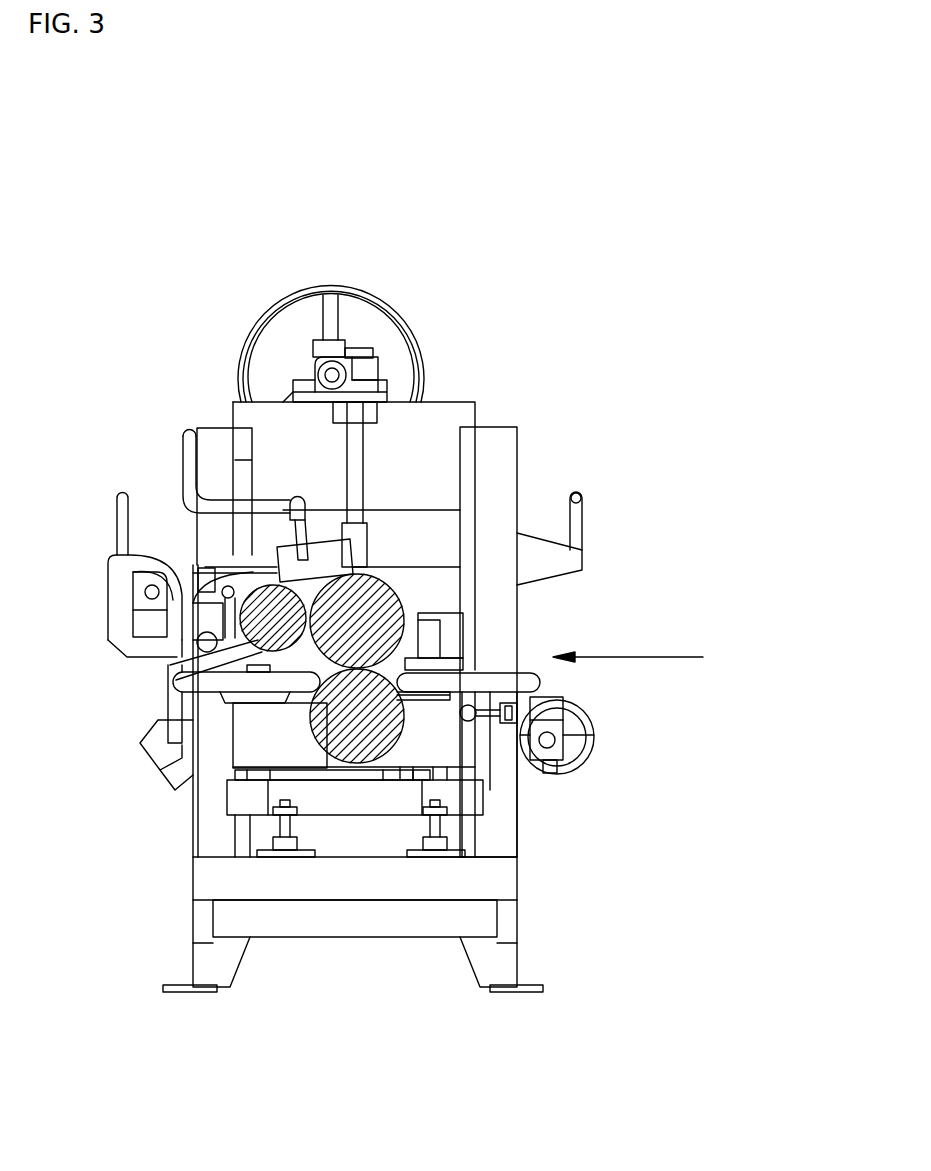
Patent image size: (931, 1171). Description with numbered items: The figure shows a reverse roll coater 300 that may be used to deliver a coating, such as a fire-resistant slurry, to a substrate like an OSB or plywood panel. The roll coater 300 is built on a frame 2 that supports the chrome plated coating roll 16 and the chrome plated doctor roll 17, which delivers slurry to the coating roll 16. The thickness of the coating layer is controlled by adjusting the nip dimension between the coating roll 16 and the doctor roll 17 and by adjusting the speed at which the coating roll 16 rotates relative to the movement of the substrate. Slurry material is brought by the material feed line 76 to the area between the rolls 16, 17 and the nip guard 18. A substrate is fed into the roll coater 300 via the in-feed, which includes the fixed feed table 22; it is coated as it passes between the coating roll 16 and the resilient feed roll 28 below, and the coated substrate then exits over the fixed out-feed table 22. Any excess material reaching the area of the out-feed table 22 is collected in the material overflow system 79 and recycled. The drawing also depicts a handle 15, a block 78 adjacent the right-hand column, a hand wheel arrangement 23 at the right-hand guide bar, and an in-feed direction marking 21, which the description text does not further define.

The reverse roll coater 300 is at (277, 266).
The frame 2 is at (488, 427).
The control handle 15 is at (115, 494).
The coating roll 16 is at (390, 596).
The doctor roll 17 is at (250, 590).
The nip guard 18 is at (375, 533).
The infeed direction 21 is at (752, 637).
The fixed feed table 22 is at (170, 682).
The right guide bar 23 is at (540, 682).
The resilient feed roll 28 is at (400, 730).
The material feed line 76 is at (181, 428).
The bearing block 78 is at (440, 640).
The material overflow system 79 is at (158, 783).